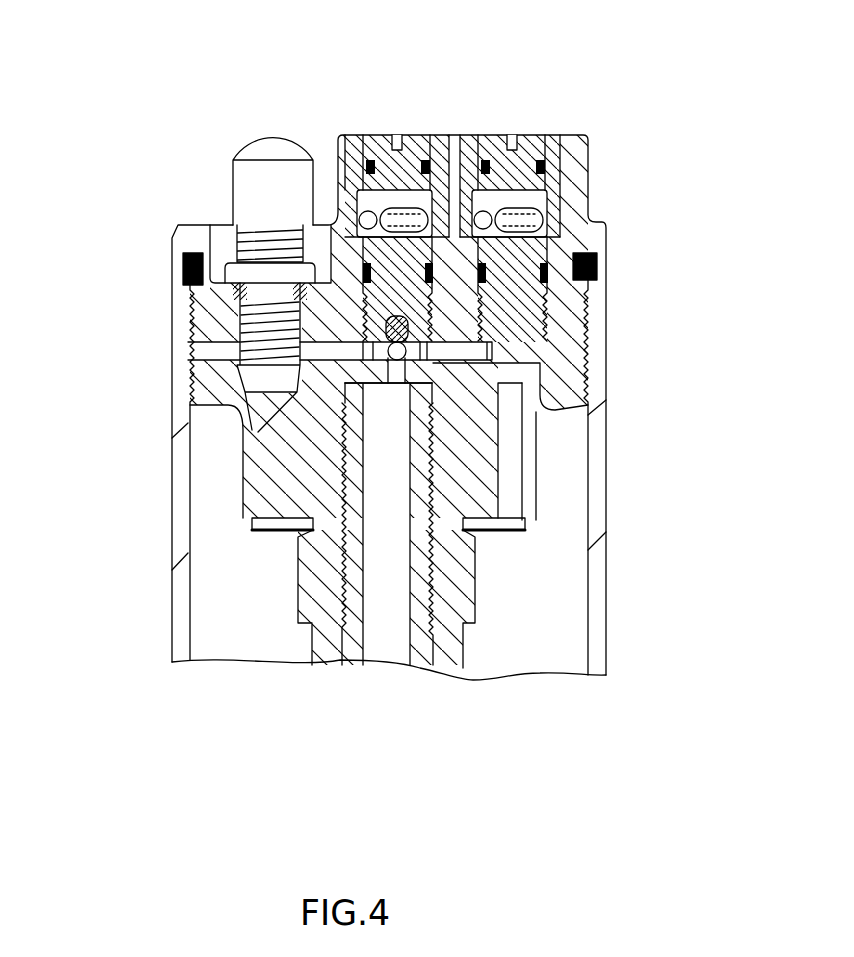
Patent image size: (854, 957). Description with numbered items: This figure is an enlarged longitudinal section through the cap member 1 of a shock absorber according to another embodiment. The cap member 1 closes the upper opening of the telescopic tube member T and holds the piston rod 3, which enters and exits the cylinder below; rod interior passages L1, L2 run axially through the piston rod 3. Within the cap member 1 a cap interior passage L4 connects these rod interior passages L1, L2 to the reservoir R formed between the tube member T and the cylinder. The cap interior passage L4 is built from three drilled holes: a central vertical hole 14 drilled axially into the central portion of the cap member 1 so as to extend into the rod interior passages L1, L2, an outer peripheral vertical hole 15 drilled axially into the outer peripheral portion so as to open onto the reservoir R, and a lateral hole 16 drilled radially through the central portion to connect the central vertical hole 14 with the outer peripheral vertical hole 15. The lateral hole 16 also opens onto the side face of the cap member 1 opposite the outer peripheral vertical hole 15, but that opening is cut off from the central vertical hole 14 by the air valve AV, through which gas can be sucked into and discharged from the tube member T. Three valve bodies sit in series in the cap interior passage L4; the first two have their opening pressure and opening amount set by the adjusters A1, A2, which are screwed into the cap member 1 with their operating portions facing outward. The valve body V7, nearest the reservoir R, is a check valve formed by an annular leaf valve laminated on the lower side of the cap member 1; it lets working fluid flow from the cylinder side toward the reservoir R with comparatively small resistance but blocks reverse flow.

The cap member 1 is at (600, 178).
The piston rod 3 is at (492, 640).
The central vertical hole 14 is at (396, 385).
The outer peripheral vertical hole 15 is at (510, 487).
The lateral hole 16 is at (217, 352).
The adjuster A1 is at (422, 130).
The adjuster A2 is at (537, 130).
The air valve AV is at (243, 185).
The rod interior passage L1 is at (386, 645).
The rod interior passage L2 is at (392, 597).
The cap interior passage L4 is at (541, 437).
The reservoir R is at (552, 658).
The tube member T is at (173, 590).
The valve body V7 is at (272, 540).